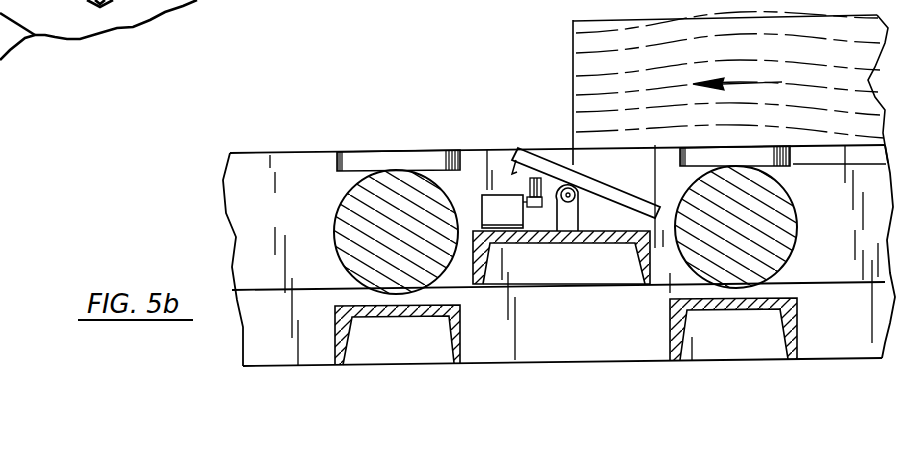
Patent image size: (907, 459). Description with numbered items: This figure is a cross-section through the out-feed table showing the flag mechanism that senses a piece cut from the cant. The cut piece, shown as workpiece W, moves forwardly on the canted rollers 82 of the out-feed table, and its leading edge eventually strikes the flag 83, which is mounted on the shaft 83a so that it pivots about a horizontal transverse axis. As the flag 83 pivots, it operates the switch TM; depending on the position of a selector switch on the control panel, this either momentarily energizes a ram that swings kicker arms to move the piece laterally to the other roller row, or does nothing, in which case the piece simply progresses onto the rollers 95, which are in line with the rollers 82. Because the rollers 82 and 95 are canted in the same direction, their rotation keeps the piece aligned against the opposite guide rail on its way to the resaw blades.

The rollers 82 is at (772, 226).
The rollers 95 is at (363, 221).
The flag 83 is at (546, 156).
The shaft 83a is at (579, 206).
The workpiece W is at (573, 73).